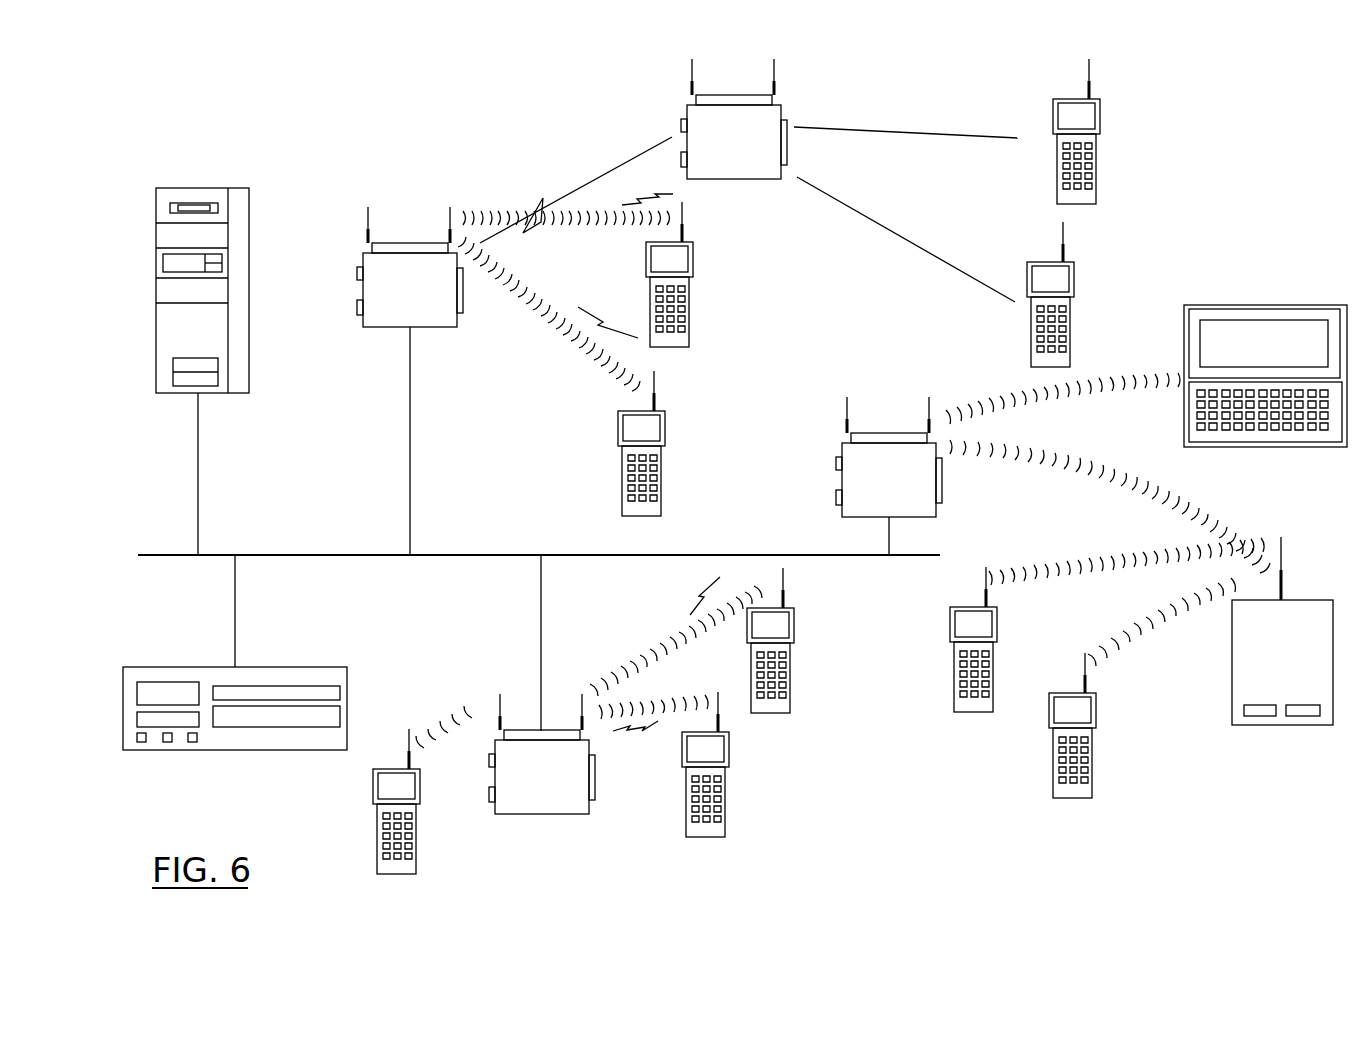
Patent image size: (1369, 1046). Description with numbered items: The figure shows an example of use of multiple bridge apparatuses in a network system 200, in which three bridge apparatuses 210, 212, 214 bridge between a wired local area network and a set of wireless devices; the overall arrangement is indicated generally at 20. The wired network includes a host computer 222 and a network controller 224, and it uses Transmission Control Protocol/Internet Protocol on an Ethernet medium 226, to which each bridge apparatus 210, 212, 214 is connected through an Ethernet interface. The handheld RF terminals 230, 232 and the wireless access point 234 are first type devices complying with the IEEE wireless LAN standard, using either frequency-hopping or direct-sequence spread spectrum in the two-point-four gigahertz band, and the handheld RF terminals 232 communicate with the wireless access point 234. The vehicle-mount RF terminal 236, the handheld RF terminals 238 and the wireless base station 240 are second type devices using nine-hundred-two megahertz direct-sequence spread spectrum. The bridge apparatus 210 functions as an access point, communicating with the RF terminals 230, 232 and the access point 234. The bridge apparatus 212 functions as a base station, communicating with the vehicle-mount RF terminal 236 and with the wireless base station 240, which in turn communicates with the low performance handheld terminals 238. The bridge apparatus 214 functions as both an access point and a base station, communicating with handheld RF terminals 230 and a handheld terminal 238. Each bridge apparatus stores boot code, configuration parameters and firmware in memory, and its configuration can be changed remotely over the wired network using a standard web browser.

The data communication system 20 is at (172, 111).
The network system 200 is at (540, 127).
The bridge apparatus 210 is at (400, 243).
The bridge apparatus 212 is at (838, 470).
The bridge apparatus 214 is at (553, 813).
The host computer 222 is at (208, 188).
The network controller 224 is at (262, 750).
The Ethernet medium 226 is at (482, 558).
The handheld RF terminal 230 is at (692, 323).
The handheld RF terminal 232 is at (1100, 148).
The wireless access point 234 is at (740, 179).
The vehicle-mount RF terminal 236 is at (1273, 305).
The handheld RF terminal 238 is at (377, 822).
The wireless base station 240 is at (1283, 725).